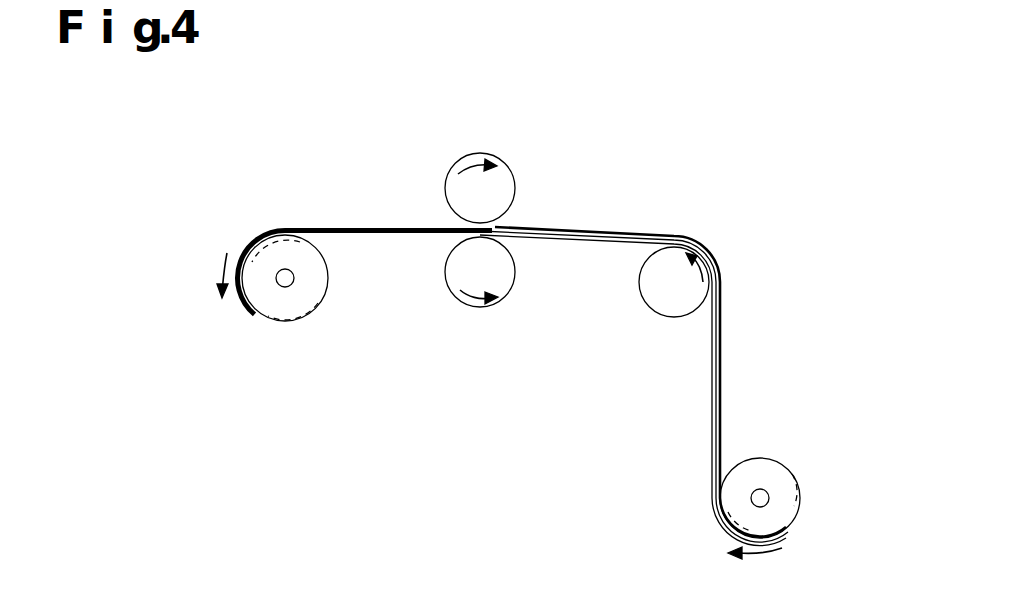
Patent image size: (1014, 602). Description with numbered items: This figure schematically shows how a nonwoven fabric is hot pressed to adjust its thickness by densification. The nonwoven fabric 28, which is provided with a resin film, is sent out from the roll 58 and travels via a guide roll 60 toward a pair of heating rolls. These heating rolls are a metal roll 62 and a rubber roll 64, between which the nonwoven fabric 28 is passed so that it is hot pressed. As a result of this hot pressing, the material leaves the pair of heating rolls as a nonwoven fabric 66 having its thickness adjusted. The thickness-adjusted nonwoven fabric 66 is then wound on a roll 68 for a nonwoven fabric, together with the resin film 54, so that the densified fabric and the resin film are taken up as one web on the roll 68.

The nonwoven fabric 28 is at (562, 228).
The resin film 54 is at (383, 234).
The roll 58 is at (788, 470).
The guide roll 60 is at (669, 306).
The metal roll 62 is at (502, 173).
The rubber roll 64 is at (500, 299).
The nonwoven fabric having its thickness adjusted 66 is at (378, 227).
The roll for a nonwoven fabric 68 is at (270, 308).